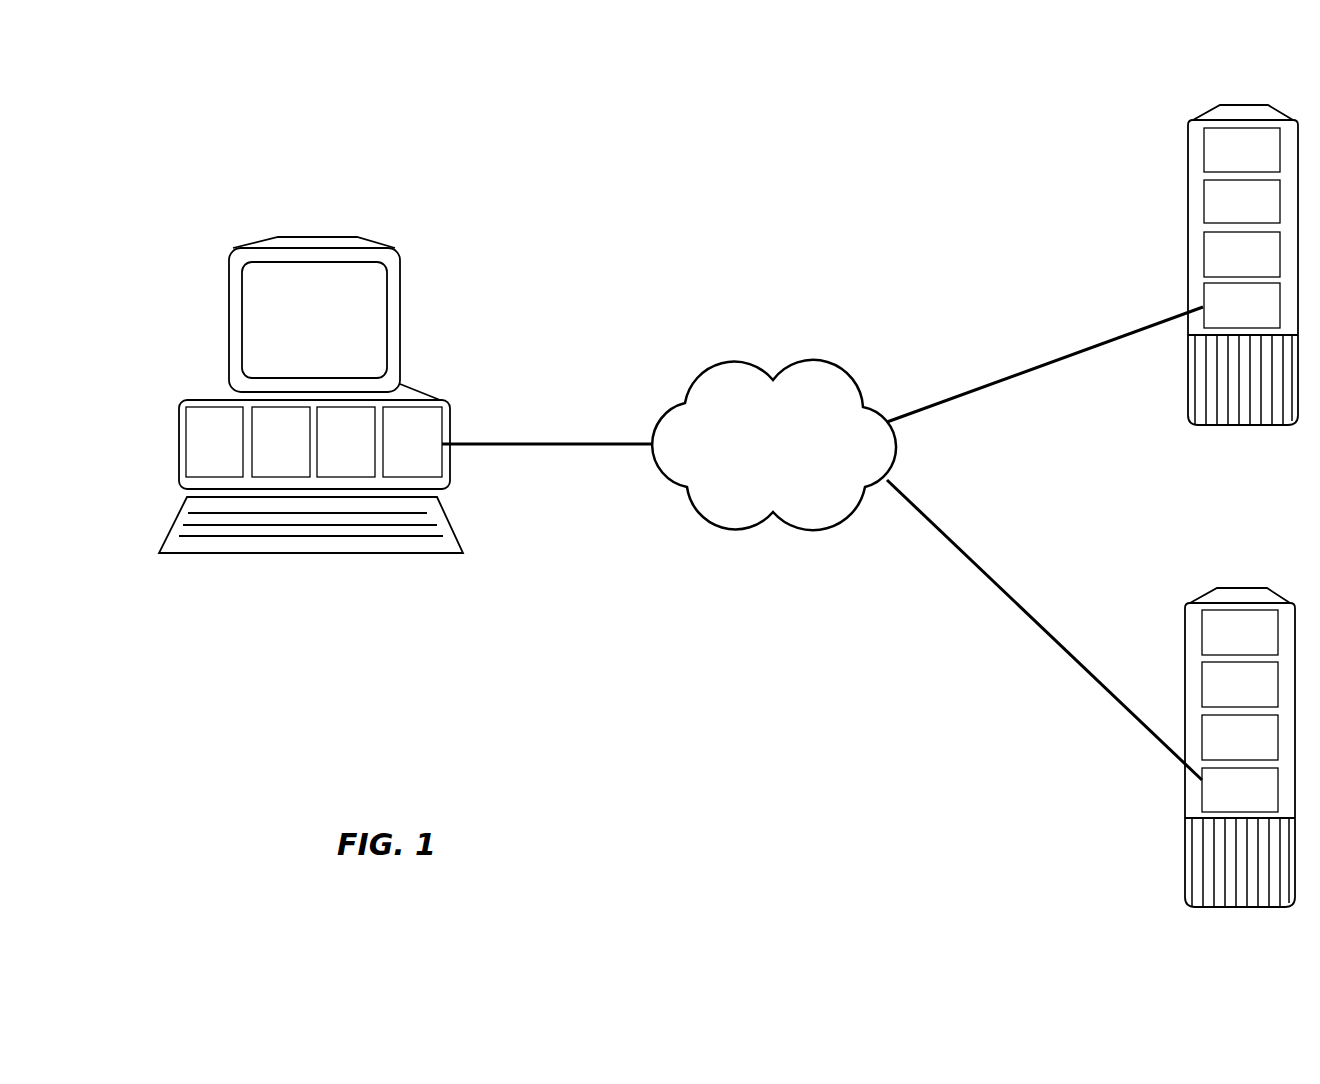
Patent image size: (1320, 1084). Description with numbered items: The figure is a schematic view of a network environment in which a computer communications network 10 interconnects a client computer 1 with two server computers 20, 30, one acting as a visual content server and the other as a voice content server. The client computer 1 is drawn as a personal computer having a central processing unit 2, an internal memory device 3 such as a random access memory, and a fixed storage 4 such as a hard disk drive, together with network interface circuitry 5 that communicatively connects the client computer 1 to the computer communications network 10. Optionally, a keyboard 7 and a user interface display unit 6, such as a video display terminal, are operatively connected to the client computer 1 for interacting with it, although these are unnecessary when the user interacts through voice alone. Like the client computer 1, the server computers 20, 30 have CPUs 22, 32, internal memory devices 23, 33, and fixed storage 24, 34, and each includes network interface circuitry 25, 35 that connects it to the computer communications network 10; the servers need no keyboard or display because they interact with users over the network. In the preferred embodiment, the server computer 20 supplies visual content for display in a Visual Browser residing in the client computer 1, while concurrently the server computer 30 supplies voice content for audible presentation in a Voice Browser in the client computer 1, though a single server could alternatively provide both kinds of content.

The client computer 1 is at (312, 432).
The central processing unit 2 is at (345, 477).
The internal memory device 3 is at (215, 477).
The fixed storage 4 is at (280, 477).
The network interface circuitry 5 is at (398, 477).
The user interface display unit 6 is at (358, 314).
The keyboard 7 is at (312, 553).
The computer communications network 10 is at (713, 523).
The server computer 20 is at (1194, 236).
The CPU 22 is at (1205, 150).
The internal memory device 23 is at (1205, 203).
The fixed storage 24 is at (1205, 253).
The network interface circuitry 25 is at (1205, 295).
The server computer 30 is at (1184, 756).
The CPU 32 is at (1202, 632).
The internal memory device 33 is at (1202, 682).
The fixed storage 34 is at (1202, 737).
The network interface circuitry 35 is at (1202, 790).